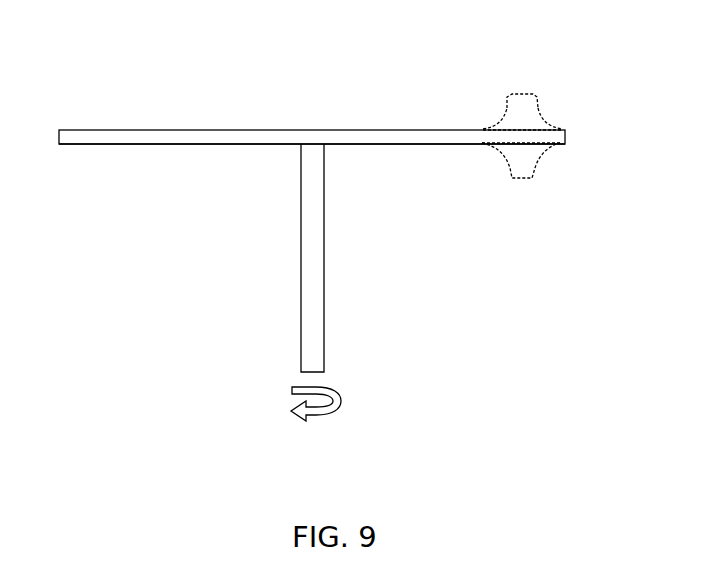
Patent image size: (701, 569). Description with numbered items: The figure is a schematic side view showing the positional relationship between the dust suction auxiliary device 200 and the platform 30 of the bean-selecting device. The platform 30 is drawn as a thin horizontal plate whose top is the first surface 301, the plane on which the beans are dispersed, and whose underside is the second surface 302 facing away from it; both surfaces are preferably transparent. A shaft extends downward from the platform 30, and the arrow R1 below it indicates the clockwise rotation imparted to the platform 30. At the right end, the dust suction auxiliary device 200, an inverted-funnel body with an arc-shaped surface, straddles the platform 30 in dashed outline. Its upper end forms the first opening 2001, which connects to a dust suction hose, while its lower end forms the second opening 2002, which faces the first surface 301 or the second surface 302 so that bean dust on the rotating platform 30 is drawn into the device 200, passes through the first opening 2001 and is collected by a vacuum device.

The platform 30 is at (335, 195).
The first surface 301 is at (188, 129).
The second surface 302 is at (92, 145).
The dust suction auxiliary device 200 is at (506, 96).
The first opening 2001 is at (521, 94).
The second opening 2002 is at (487, 127).
The arrow R1 is at (316, 426).